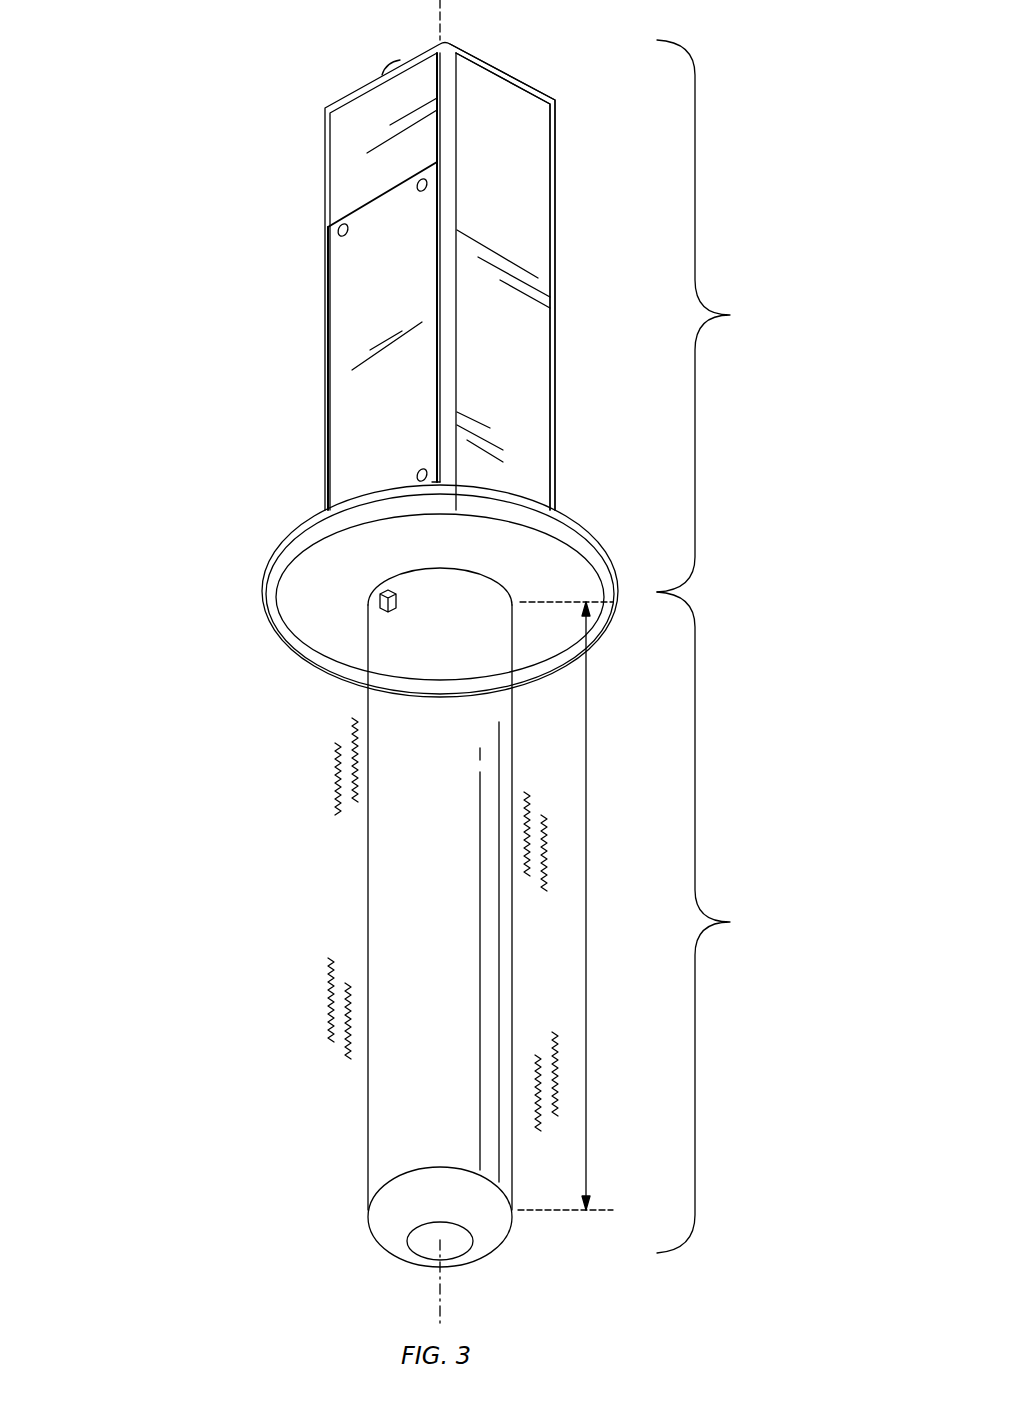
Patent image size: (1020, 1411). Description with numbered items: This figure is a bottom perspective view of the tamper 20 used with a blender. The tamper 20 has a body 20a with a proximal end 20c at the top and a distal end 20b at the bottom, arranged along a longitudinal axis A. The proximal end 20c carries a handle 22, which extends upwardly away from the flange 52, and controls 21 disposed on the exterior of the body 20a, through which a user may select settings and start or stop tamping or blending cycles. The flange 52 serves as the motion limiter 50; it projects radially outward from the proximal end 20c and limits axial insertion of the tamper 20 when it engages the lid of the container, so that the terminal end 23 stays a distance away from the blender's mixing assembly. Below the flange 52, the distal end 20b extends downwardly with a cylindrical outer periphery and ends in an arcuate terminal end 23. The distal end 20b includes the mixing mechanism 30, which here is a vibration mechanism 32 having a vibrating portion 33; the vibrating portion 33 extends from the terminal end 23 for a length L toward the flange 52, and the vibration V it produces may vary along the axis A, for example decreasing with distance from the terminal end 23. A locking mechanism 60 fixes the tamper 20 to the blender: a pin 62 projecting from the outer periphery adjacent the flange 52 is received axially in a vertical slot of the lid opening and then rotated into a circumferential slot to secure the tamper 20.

The tamper 20 is at (212, 226).
The controls 21 is at (397, 62).
The handle 22 is at (513, 138).
The body 20a is at (525, 348).
The distal end 20b is at (720, 922).
The proximal end 20c is at (719, 316).
The terminal end 23 is at (397, 1238).
The mixing mechanism 30 is at (180, 947).
The vibration mechanism 32 is at (305, 1022).
The vibrating portion 33 is at (420, 935).
The motion limiter 50 is at (261, 522).
The flange 52 is at (303, 595).
The locking mechanism 60 is at (347, 618).
The pin 62 is at (386, 612).
The longitudinal axis A is at (443, 3).
The length L is at (586, 885).
The vibration V is at (328, 1003).